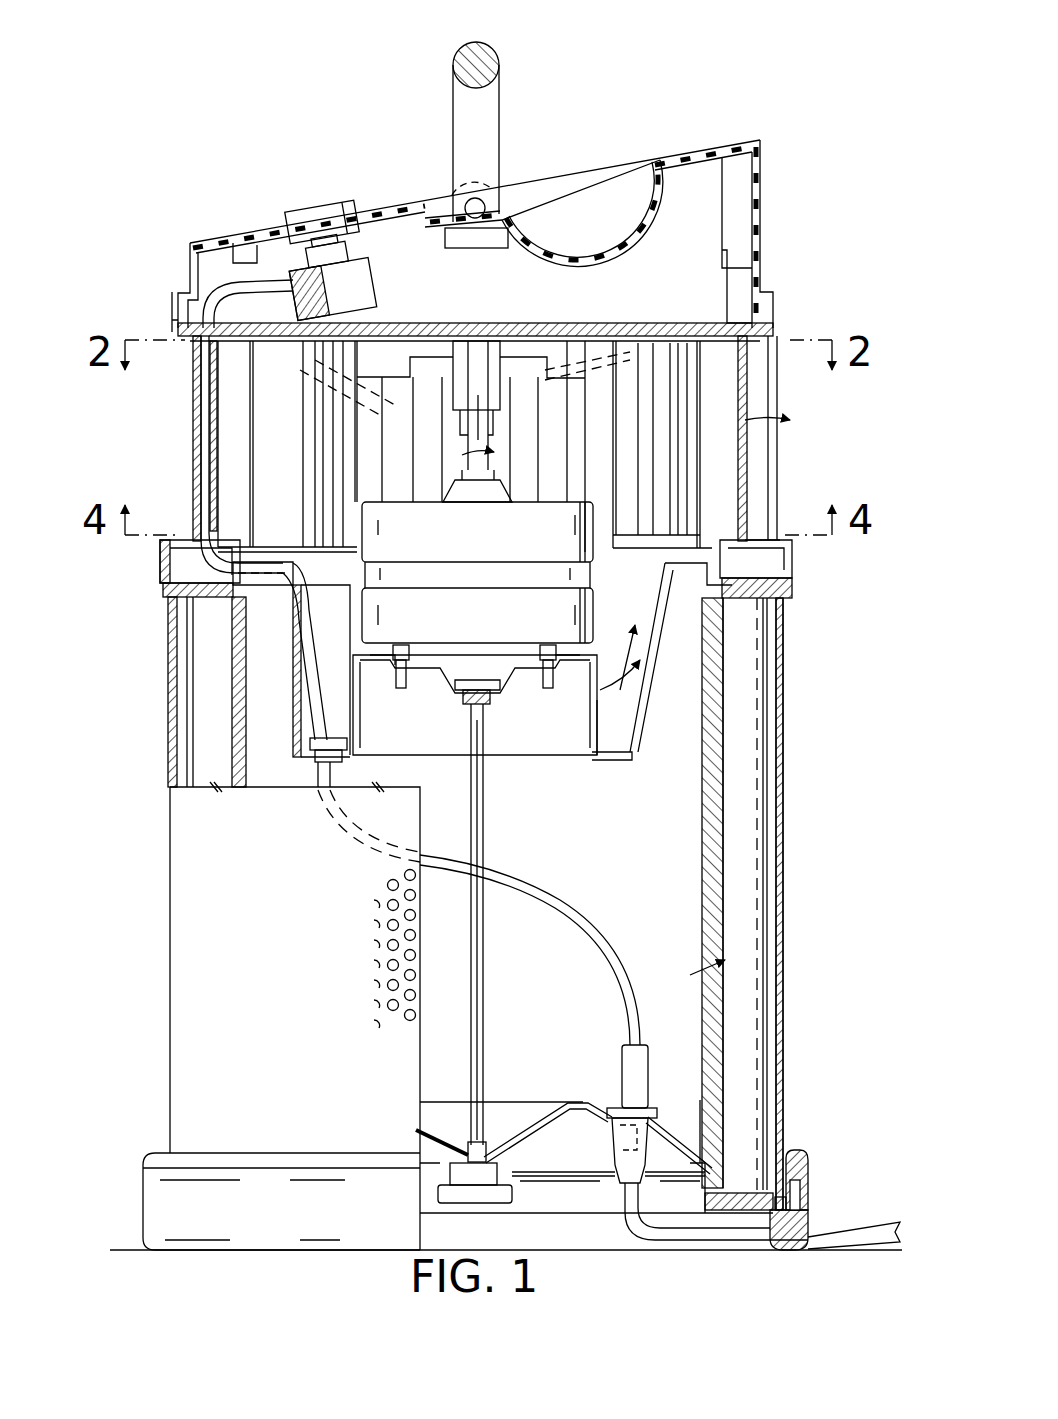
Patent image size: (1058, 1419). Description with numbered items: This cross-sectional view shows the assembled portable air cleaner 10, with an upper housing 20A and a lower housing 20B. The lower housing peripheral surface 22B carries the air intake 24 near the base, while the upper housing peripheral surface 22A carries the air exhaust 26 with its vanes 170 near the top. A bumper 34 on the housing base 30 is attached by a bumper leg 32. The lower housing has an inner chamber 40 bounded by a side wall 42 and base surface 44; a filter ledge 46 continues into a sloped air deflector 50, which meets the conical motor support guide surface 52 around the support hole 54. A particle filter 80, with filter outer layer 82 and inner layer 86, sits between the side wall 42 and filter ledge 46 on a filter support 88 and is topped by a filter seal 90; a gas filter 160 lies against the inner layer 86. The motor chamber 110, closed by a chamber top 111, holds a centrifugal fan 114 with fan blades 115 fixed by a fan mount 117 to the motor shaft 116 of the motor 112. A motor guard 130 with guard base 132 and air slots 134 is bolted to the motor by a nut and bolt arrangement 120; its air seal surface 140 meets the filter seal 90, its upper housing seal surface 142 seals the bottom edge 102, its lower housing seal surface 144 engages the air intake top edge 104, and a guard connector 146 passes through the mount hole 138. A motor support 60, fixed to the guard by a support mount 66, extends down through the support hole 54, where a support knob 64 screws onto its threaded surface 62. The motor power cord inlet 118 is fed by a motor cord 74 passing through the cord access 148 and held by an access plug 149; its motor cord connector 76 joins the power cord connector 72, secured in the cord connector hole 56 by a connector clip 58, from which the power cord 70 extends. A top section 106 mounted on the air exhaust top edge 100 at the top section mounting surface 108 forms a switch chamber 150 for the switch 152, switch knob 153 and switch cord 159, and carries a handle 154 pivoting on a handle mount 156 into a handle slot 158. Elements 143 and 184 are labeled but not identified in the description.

The portable air cleaner 10 is at (775, 72).
The upper housing 20A is at (188, 440).
The lower housing 20B is at (168, 908).
The upper housing peripheral surface 22A is at (193, 402).
The lower housing peripheral surface 22B is at (784, 877).
The air intake 24 is at (170, 700).
The air exhaust 26 is at (772, 492).
The housing base 30 is at (570, 1220).
The bumper leg 32 is at (808, 1200).
The bumper 34 is at (797, 1248).
The inner chamber 40 is at (560, 1002).
The side wall 42 is at (780, 975).
The base surface 44 is at (800, 1200).
The filter ledge 46 is at (778, 1195).
The air deflector 50 is at (708, 1180).
The motor support guide surface 52 is at (525, 1125).
The support hole 54 is at (505, 1160).
The cord connector hole 56 is at (622, 1110).
The connector clip 58 is at (610, 1125).
The motor support 60 is at (488, 838).
The threaded surface 62 is at (470, 1140).
The support knob 64 is at (440, 1192).
The support mount 66 is at (485, 700).
The power cord 70 is at (875, 1232).
The power cord connector 72 is at (622, 1165).
The motor cord 74 is at (520, 900).
The motor cord connector 76 is at (622, 1058).
The particle filter 80 is at (762, 728).
The filter outer layer 82 is at (768, 932).
The inner layer 86 is at (705, 872).
The filter support 88 is at (722, 1210).
The filter seal 90 is at (695, 670).
The air exhaust top edge 100 is at (188, 298).
The bottom edge 102 is at (163, 570).
The air intake top edge 104 is at (735, 600).
The top section 106 is at (690, 150).
The top section mounting surface 108 is at (174, 312).
The motor chamber 110 is at (293, 600).
The chamber top 111 is at (632, 330).
The motor 112 is at (440, 660).
The centrifugal fan 114 is at (700, 395).
The fan blades 115 is at (355, 385).
The motor shaft 116 is at (490, 360).
The fan mount 117 is at (468, 345).
The motor power cord inlet 118 is at (340, 600).
The nut and bolt arrangement 120 is at (548, 690).
The motor guard 130 is at (615, 760).
The guard base 132 is at (525, 700).
The air slots 134 is at (360, 680).
The mount hole 138 is at (462, 690).
The air seal surface 140 is at (285, 590).
The upper housing seal surface 142 is at (190, 575).
The top flange 143 is at (760, 540).
The lower housing seal surface 144 is at (165, 590).
The guard connector 146 is at (768, 598).
The cord access 148 is at (318, 760).
The access plug 149 is at (322, 790).
The switch chamber 150 is at (380, 245).
The switch 152 is at (365, 295).
The switch knob 153 is at (315, 212).
The handle 154 is at (492, 52).
The handle mount 156 is at (483, 203).
The handle slot 158 is at (600, 222).
The switch cord 159 is at (262, 288).
The gas filter 160 is at (712, 820).
The vanes 170 is at (765, 452).
The wire tube 184 is at (205, 446).